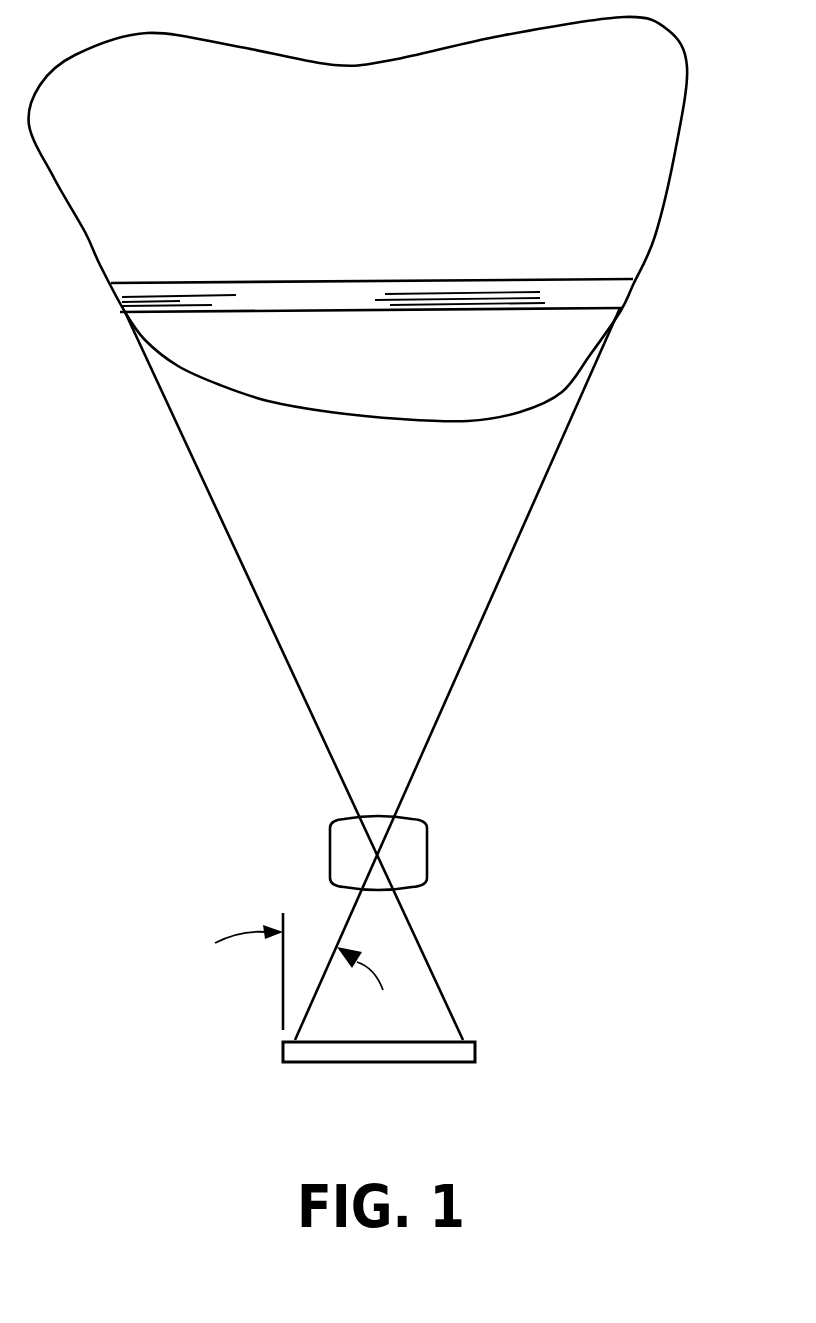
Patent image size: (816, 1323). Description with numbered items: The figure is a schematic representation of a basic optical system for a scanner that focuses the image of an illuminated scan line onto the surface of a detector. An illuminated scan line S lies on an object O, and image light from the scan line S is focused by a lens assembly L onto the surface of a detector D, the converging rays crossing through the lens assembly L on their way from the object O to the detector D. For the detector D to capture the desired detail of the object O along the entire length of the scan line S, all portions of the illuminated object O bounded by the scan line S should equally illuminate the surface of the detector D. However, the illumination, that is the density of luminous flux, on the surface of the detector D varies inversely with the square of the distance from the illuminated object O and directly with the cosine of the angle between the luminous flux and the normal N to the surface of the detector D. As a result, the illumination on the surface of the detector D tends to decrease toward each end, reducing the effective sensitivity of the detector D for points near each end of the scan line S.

The object O is at (689, 66).
The scan line S is at (602, 279).
The lens assembly L is at (427, 848).
The normal N is at (283, 993).
The detector D is at (453, 1062).